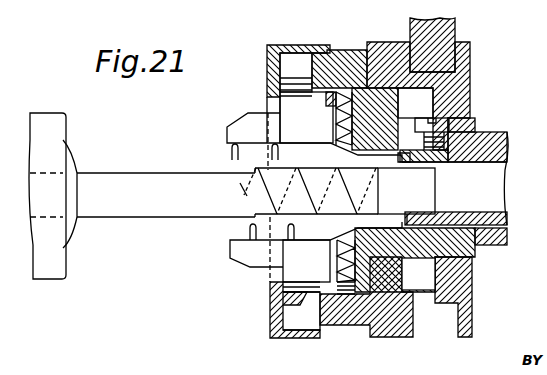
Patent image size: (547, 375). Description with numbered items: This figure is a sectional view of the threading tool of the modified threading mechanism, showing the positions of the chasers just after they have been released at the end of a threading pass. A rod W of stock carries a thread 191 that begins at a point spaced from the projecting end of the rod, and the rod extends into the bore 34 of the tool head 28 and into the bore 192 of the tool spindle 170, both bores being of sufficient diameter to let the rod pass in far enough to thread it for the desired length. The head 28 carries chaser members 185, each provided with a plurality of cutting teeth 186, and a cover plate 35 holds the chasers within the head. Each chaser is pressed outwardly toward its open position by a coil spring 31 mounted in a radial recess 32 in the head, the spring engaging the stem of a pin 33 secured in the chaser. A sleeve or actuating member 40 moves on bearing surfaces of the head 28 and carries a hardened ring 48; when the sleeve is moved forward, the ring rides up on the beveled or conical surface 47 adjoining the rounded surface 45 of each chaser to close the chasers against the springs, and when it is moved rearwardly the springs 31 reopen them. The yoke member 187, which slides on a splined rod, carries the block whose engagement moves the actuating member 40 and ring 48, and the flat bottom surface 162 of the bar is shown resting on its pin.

The rod W is at (200, 230).
The thread 191 is at (250, 178).
The bore of the tool spindle 192 is at (485, 198).
The bore of the tool head 34 is at (368, 166).
The cover plate 35 is at (292, 46).
The rounded surface 45 is at (296, 82).
The hardened ring 48 is at (348, 62).
The beveled or conical surface 47 is at (309, 96).
The sleeve or actuating member 40 is at (470, 80).
The yoke member 187 is at (452, 38).
The head 28 is at (415, 103).
The flat bottom surface 162 is at (462, 118).
The tool spindle 170 is at (508, 134).
The chaser member 185 is at (253, 118).
The cutting teeth 186 is at (234, 152).
The radial recess 32 is at (336, 252).
The coil spring 31 is at (336, 268).
The pin 33 is at (347, 290).